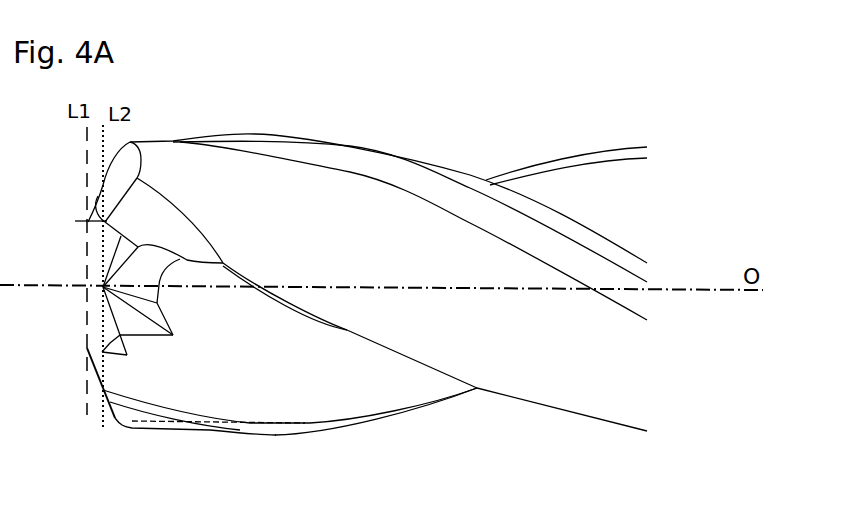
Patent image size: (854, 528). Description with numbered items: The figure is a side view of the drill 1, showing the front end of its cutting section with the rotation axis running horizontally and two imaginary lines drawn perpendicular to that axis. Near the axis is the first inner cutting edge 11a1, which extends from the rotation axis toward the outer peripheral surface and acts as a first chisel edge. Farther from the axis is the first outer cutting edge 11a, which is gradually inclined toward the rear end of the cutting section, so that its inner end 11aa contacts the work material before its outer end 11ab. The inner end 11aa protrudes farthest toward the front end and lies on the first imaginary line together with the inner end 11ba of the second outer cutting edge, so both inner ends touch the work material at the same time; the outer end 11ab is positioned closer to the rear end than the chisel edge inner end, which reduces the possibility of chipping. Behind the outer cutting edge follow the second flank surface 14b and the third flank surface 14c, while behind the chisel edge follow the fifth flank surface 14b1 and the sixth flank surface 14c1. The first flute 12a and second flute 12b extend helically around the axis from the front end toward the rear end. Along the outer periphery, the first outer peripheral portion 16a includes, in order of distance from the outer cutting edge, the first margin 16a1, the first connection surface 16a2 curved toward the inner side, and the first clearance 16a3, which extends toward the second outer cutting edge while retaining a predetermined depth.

The drill 1 is at (458, 153).
The first flute 12a is at (223, 392).
The second flute 12b is at (597, 190).
The first outer peripheral portion 16a is at (702, 291).
The first margin 16a1 is at (577, 232).
The first connection surface 16a2 is at (577, 267).
The first clearance 16a3 is at (570, 378).
The second flank surface 14b is at (127, 164).
The third flank surface 14c is at (137, 207).
The inner end of the second outer cutting edge 11ba is at (75, 221).
The fifth flank surface 14b1 is at (123, 248).
The sixth flank surface 14c1 is at (130, 273).
The first inner cutting edge 11a1 is at (90, 325).
The first outer cutting edge 11a is at (133, 482).
The inner end of the first outer cutting edge 11aa is at (87, 349).
The outer end of the first outer cutting edge 11ab is at (112, 428).